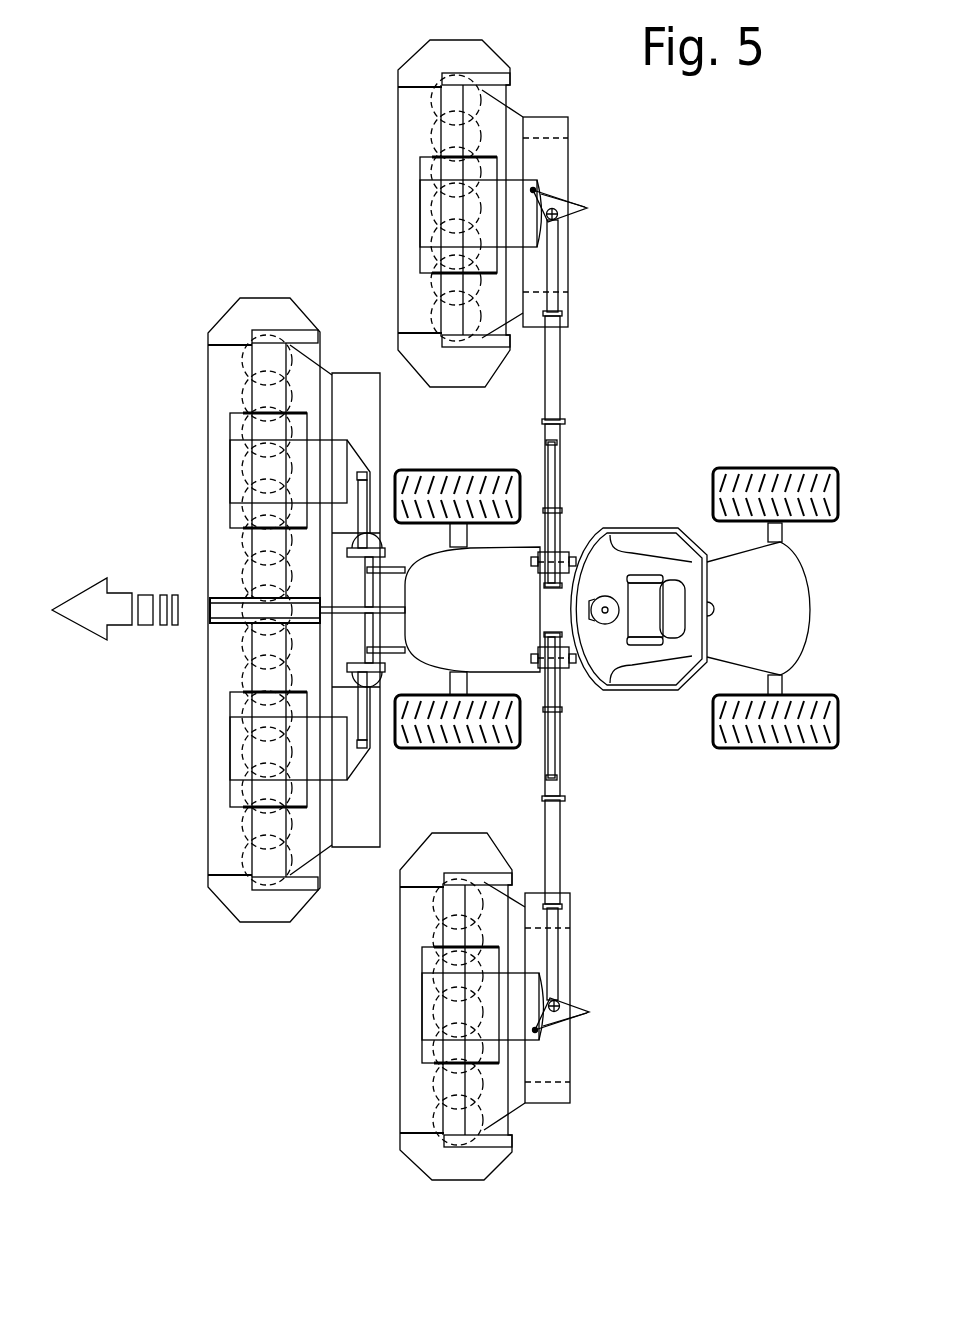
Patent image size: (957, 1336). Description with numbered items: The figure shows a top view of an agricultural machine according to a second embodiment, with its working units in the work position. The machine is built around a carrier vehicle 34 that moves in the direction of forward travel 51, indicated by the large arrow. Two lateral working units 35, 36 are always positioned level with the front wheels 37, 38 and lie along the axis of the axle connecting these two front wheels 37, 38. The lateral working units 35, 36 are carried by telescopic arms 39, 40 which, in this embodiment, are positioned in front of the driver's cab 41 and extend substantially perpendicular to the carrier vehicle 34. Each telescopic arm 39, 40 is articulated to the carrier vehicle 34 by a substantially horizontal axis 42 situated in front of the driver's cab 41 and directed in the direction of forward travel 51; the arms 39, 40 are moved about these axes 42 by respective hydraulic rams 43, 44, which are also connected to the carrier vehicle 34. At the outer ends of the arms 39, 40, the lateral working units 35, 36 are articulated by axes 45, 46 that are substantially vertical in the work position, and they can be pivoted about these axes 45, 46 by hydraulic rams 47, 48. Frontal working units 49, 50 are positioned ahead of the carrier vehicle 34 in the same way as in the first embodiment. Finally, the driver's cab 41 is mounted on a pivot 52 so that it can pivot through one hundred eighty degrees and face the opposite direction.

The carrier vehicle 34 is at (782, 632).
The lateral working unit 35 is at (408, 130).
The lateral working unit 36 is at (407, 1088).
The front wheel 37 is at (412, 470).
The front wheel 38 is at (413, 750).
The telescopic arm 39 is at (550, 393).
The telescopic arm 40 is at (550, 830).
The driver's cab 41 is at (632, 677).
The horizontal axis 42 is at (572, 547).
The hydraulic ram 43 is at (553, 487).
The hydraulic ram 44 is at (563, 743).
The vertical axis 45 is at (558, 222).
The vertical axis 46 is at (567, 992).
The hydraulic ram 47 is at (578, 205).
The hydraulic ram 48 is at (580, 1013).
The frontal working unit 49 is at (218, 453).
The frontal working unit 50 is at (217, 803).
The direction of forward travel 51 is at (87, 598).
The pivot 52 is at (720, 609).